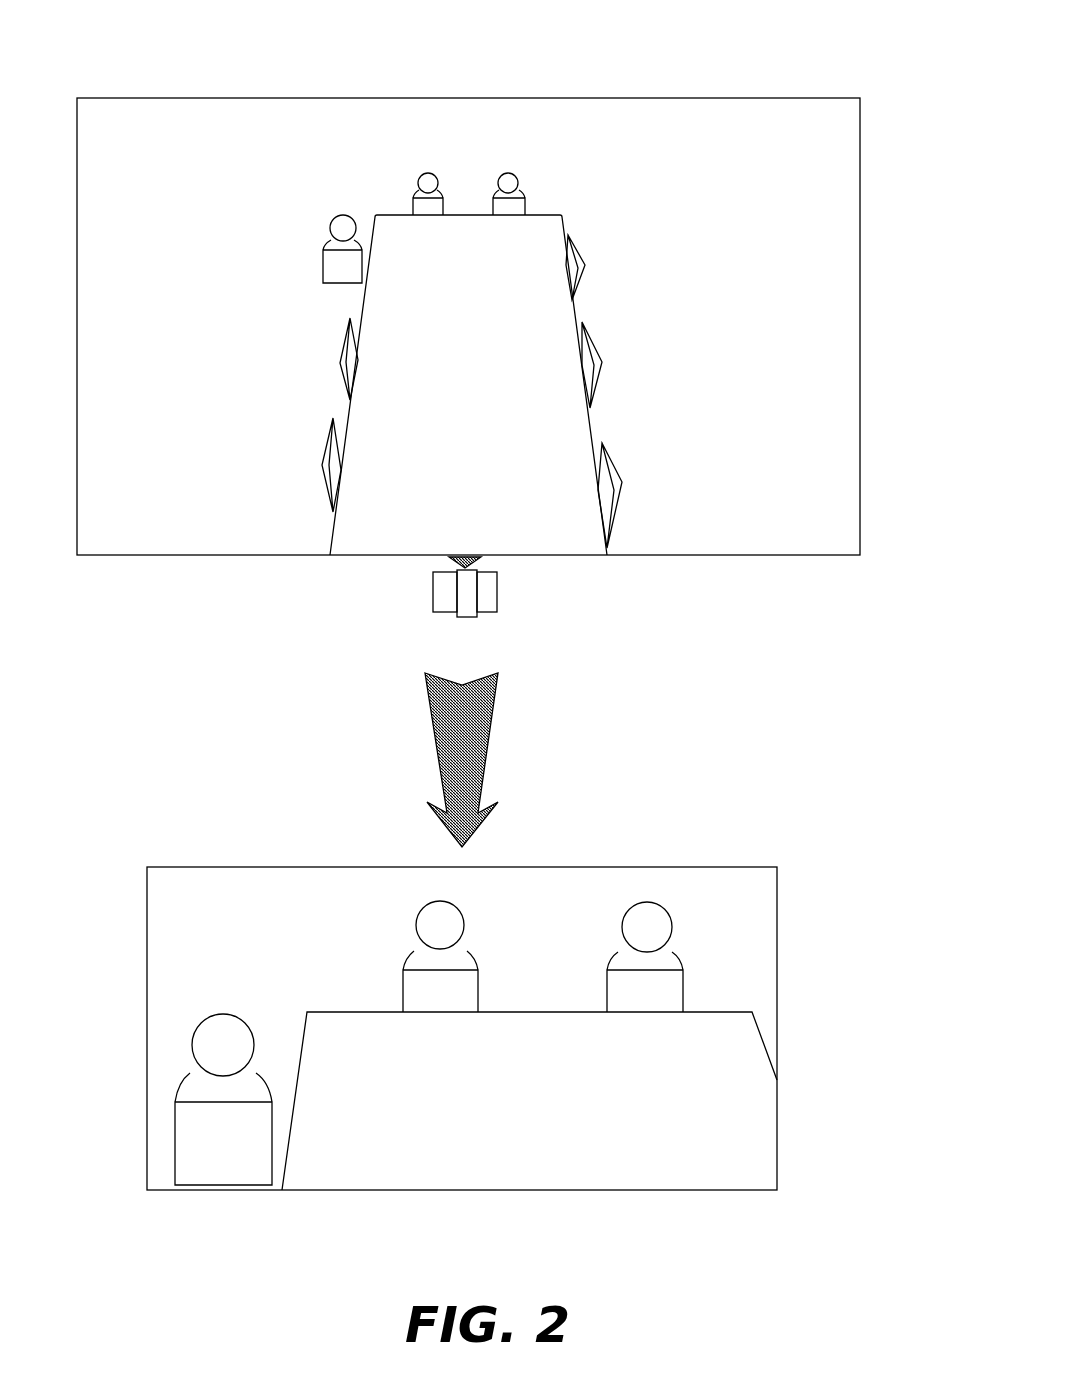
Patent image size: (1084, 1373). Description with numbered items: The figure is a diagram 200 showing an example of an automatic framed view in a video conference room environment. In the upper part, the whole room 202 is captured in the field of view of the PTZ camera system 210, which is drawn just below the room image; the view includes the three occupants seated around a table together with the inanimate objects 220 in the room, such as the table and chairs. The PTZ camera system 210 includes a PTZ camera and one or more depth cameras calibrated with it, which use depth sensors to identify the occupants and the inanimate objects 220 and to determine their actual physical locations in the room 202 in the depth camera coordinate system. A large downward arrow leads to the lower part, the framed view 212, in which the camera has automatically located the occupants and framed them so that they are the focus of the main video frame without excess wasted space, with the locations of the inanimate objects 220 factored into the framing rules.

The diagram 200 is at (820, 30).
The room 202 is at (526, 95).
The PTZ camera system 210 is at (428, 599).
The framed view 212 is at (751, 851).
The inanimate objects 220 is at (641, 391).